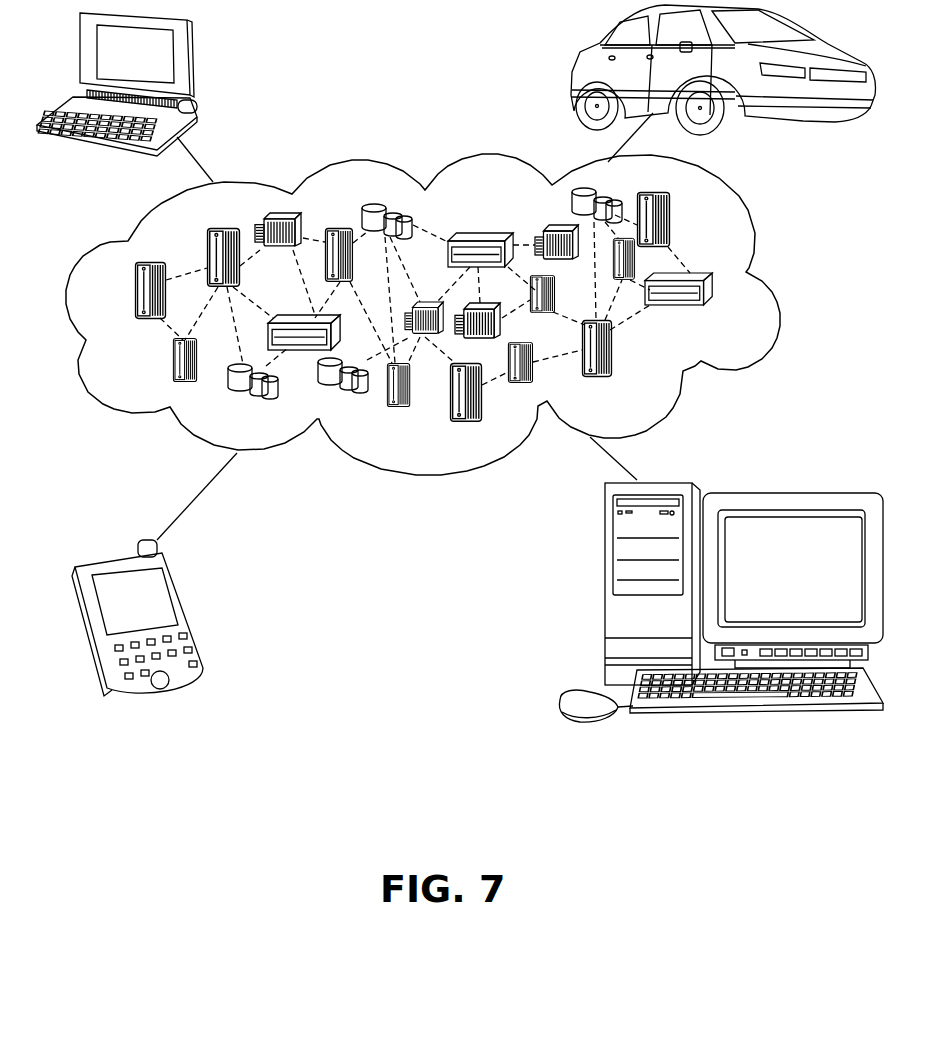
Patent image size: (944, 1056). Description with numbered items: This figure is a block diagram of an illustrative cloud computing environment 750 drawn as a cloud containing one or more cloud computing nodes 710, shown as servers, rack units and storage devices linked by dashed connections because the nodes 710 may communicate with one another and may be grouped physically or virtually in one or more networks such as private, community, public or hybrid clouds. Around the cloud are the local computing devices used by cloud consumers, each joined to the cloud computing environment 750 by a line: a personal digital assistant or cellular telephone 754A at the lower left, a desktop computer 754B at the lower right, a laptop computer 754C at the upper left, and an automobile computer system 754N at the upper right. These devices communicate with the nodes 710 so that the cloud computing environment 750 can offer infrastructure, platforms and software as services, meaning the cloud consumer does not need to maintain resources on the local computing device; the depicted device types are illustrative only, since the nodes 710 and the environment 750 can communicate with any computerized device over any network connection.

The cloud computing nodes 710 is at (742, 312).
The cloud computing environment 750 is at (753, 252).
The personal digital assistant (PDA) or cellular telephone 754A is at (188, 612).
The desktop computer 754B is at (603, 593).
The laptop computer 754C is at (194, 61).
The automobile computer system 754N is at (580, 58).